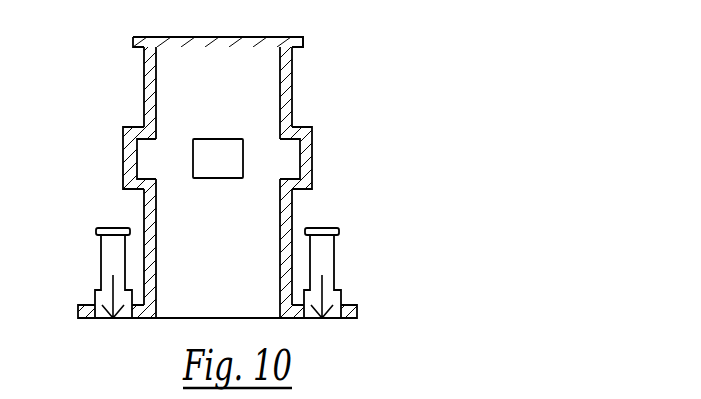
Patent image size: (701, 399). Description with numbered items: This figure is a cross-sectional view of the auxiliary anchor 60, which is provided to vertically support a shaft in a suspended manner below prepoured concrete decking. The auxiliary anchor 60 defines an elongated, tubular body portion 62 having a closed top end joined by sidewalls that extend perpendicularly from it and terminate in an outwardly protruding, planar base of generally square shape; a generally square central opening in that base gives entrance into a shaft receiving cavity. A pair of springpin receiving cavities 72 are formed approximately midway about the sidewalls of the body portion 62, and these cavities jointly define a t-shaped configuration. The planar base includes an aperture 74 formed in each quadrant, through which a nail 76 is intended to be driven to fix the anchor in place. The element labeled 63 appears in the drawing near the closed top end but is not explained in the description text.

The cap assembly 60 is at (231, 181).
The side wall 62 is at (148, 95).
The top wall 63 is at (297, 37).
The annular bead 72 is at (150, 165).
The base flange 74 is at (117, 318).
The fastener pin 76 is at (333, 261).